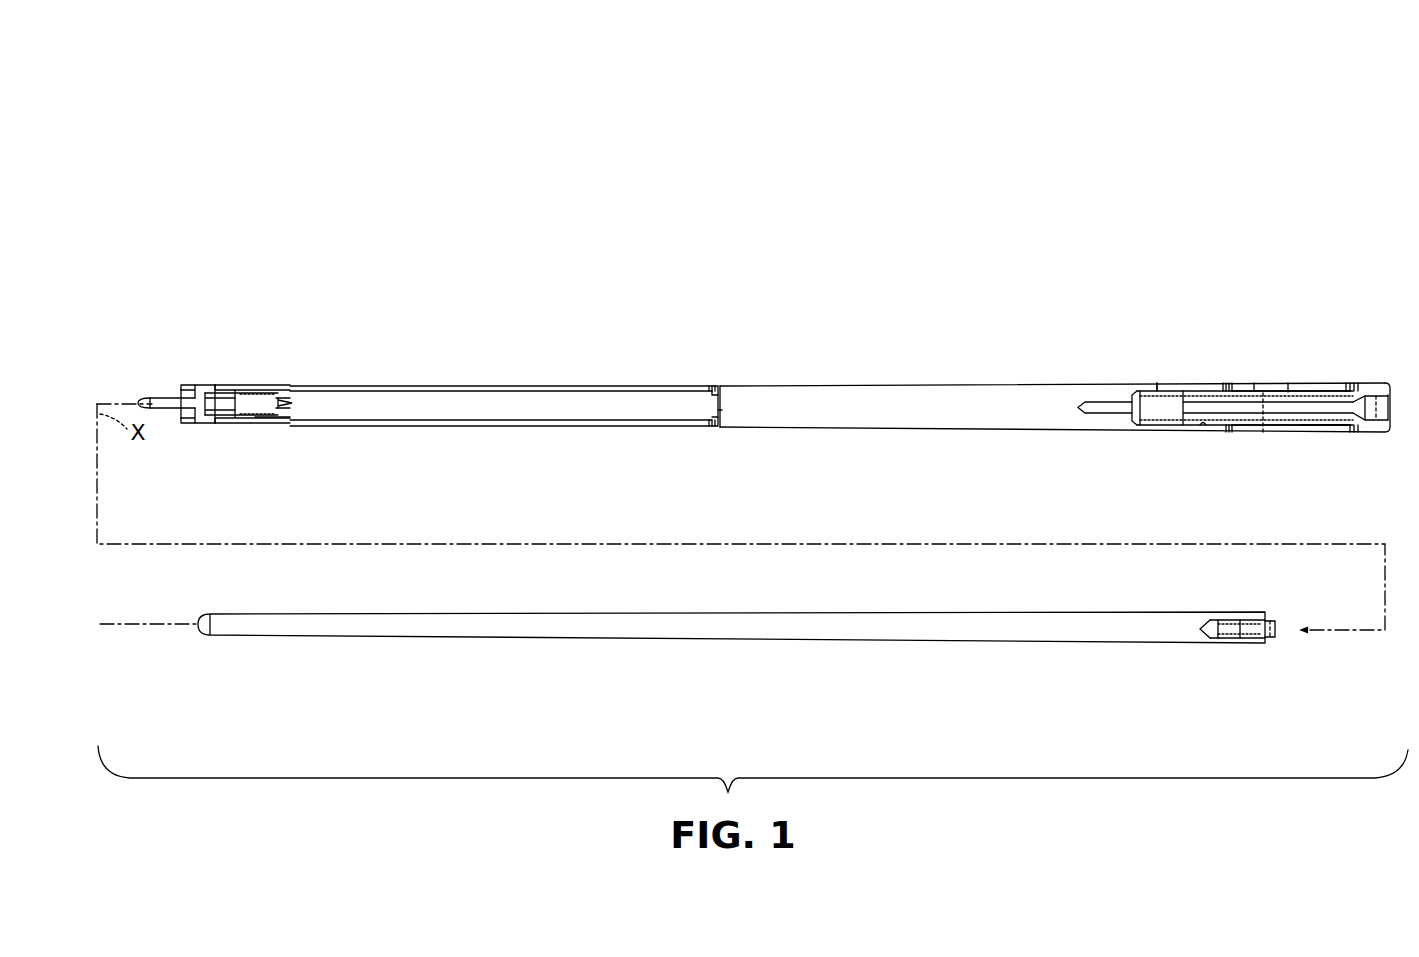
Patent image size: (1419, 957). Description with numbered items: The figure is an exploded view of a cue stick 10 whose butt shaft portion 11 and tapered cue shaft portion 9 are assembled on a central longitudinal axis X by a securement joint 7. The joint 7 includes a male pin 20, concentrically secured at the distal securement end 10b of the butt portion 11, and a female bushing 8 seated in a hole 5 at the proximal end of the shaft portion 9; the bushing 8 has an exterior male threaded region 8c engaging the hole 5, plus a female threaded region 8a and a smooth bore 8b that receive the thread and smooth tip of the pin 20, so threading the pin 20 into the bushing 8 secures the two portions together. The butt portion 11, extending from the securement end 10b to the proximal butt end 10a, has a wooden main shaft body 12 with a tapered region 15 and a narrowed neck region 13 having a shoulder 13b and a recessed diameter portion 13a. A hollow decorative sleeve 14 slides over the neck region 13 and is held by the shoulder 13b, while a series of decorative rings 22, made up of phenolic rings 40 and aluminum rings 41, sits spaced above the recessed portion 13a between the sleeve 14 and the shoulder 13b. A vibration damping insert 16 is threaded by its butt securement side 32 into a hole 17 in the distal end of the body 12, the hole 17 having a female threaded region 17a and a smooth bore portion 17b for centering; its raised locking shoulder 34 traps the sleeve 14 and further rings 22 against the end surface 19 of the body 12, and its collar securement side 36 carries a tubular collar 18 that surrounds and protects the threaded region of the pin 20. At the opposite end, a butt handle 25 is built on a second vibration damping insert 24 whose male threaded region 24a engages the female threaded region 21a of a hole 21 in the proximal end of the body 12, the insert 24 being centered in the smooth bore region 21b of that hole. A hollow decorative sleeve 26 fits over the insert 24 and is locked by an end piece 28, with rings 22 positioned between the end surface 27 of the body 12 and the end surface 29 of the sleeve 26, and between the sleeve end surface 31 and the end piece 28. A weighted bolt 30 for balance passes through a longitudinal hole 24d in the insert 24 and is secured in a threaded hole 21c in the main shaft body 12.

The hole 5 is at (1213, 641).
The cue stick securement coupling or joint 7 is at (128, 378).
The female shaft coupling member, sleeve or bushing 8 is at (1276, 623).
The female threaded region 8a is at (1270, 639).
The smooth bore 8b is at (1243, 640).
The exterior male threaded region 8c is at (1246, 621).
The tapered cue shaft portion 9 is at (846, 656).
The cue stick 10 is at (749, 176).
The proximal butt end 10a is at (1366, 266).
The distal securement end 10b is at (226, 306).
The butt shaft portion 11 is at (889, 303).
The main butt shaft body 12 is at (901, 392).
The narrowed neck region 13 is at (590, 400).
The recessed diameter portion 13a is at (724, 410).
The shoulder 13b is at (713, 427).
The decorative sleeve 14 is at (521, 386).
The tapered diameter region 15 is at (1004, 383).
The vibration damping insert 16 is at (266, 394).
The hole 17 is at (271, 420).
The female threaded region 17a is at (281, 418).
The smooth female diameter bore portion 17b is at (256, 425).
The collar 18 is at (206, 386).
The axial or distal end surface 19 is at (231, 423).
The male butt coupling member, rod or pin 20 is at (166, 398).
The hole 21 is at (1199, 425).
The female threaded region 21a is at (1146, 428).
The smooth bore region 21b is at (1205, 430).
The hole 21c is at (1096, 418).
The series of decorative rings 22 is at (237, 392).
The butt handle vibration damping insert 24 is at (1260, 385).
The male threaded region 24a is at (1157, 385).
The hole 24d is at (1288, 385).
The butt handle 25 is at (1251, 240).
The hollow decorative sleeve 26 is at (1300, 433).
The end surface 27 is at (1225, 385).
The end cap or end piece 28 is at (1372, 435).
The end surface 29 is at (1257, 388).
The weighted bolt 30 is at (1263, 395).
The end surface 31 is at (1350, 385).
The butt securement end or side 32 is at (255, 393).
The raised locking flange or shoulder 34 is at (224, 386).
The collar securement end or side 36 is at (204, 418).
The phenolic rings 40 is at (713, 386).
The metallic or aluminum rings 41 is at (716, 386).